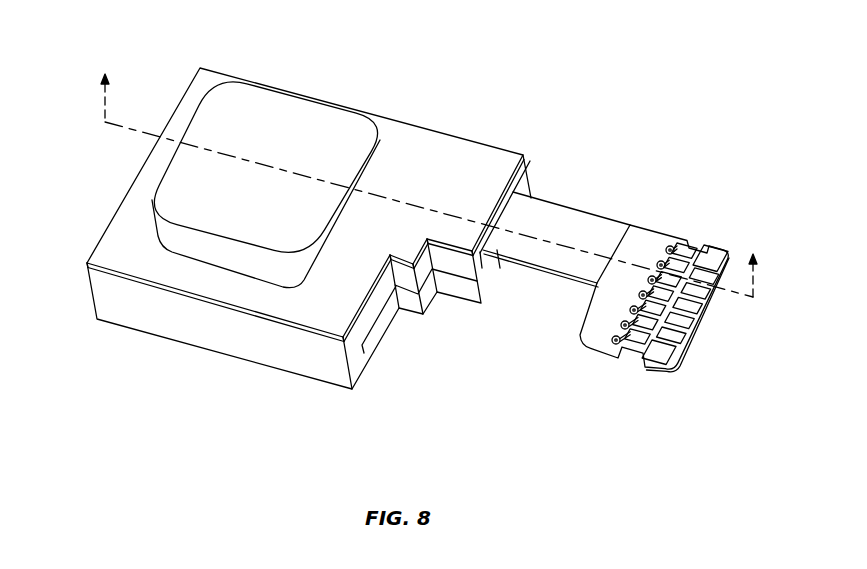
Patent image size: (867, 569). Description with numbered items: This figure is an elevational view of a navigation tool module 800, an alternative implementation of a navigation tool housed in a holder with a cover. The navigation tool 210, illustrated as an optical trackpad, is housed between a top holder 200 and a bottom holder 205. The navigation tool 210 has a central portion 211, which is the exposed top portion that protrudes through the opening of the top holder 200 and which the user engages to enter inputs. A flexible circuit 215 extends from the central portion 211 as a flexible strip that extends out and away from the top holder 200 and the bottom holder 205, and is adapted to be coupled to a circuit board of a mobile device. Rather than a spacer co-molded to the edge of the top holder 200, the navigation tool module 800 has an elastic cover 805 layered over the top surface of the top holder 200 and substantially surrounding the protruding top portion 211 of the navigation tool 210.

The navigation tool module 800 is at (158, 25).
The top holder 200 is at (208, 340).
The elastic cover 805 is at (117, 240).
The bottom holder 205 is at (377, 333).
The navigation tool 210 is at (302, 96).
The central portion 211 is at (372, 168).
The flexible circuit 215 is at (579, 207).